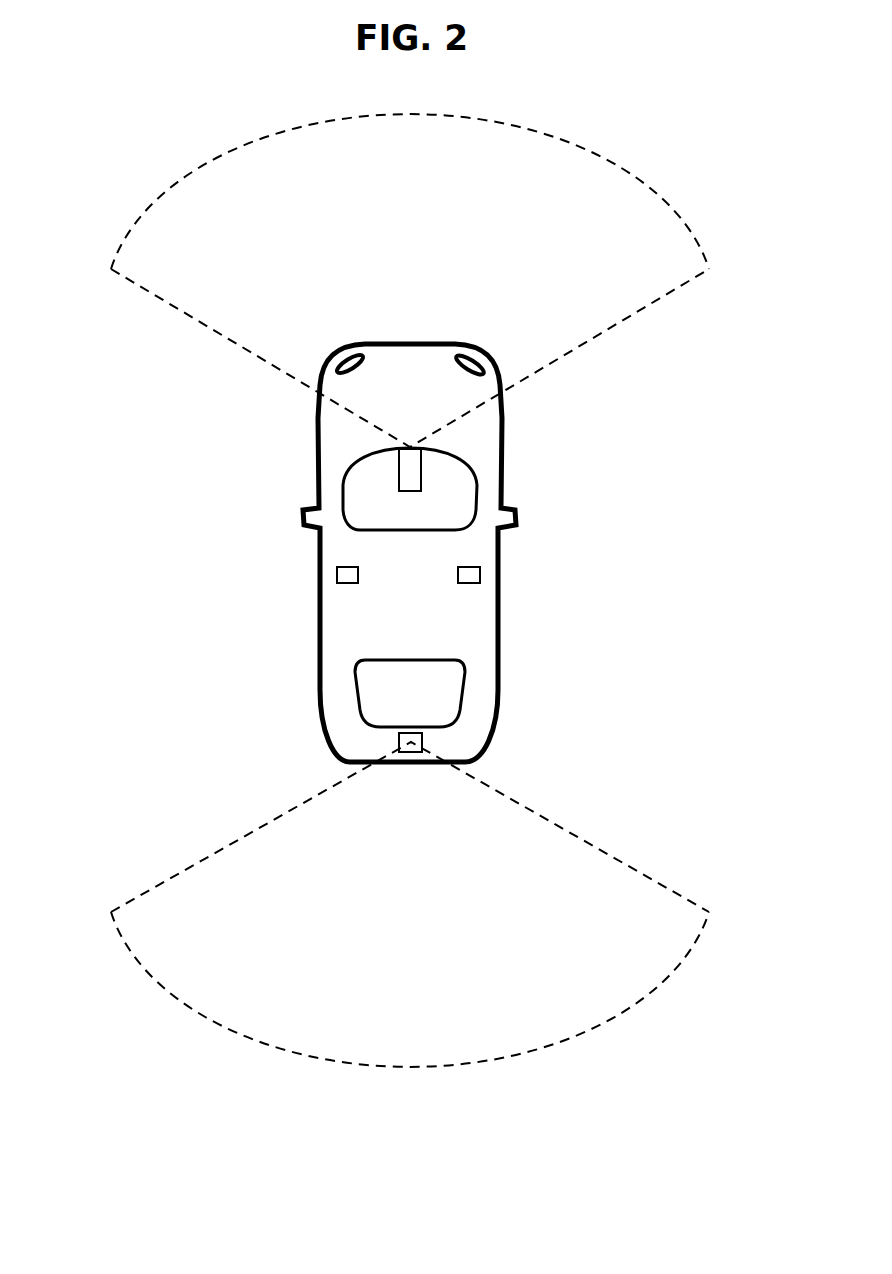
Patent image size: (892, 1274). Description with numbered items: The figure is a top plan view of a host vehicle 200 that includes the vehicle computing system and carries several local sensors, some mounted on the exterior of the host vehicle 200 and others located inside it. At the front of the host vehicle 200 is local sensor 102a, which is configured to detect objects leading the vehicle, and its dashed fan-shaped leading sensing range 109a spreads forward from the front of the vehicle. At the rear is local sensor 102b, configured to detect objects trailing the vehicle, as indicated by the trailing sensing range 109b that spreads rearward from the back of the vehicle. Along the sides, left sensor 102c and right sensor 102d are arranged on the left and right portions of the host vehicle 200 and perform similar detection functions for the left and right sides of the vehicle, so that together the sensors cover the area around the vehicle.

The host vehicle 200 is at (705, 553).
The local sensor 102a is at (410, 475).
The local sensor 102b is at (412, 748).
The left sensor 102c is at (345, 573).
The right sensor 102d is at (473, 573).
The leading sensing range 109a is at (592, 342).
The trailing sensing range 109b is at (685, 898).